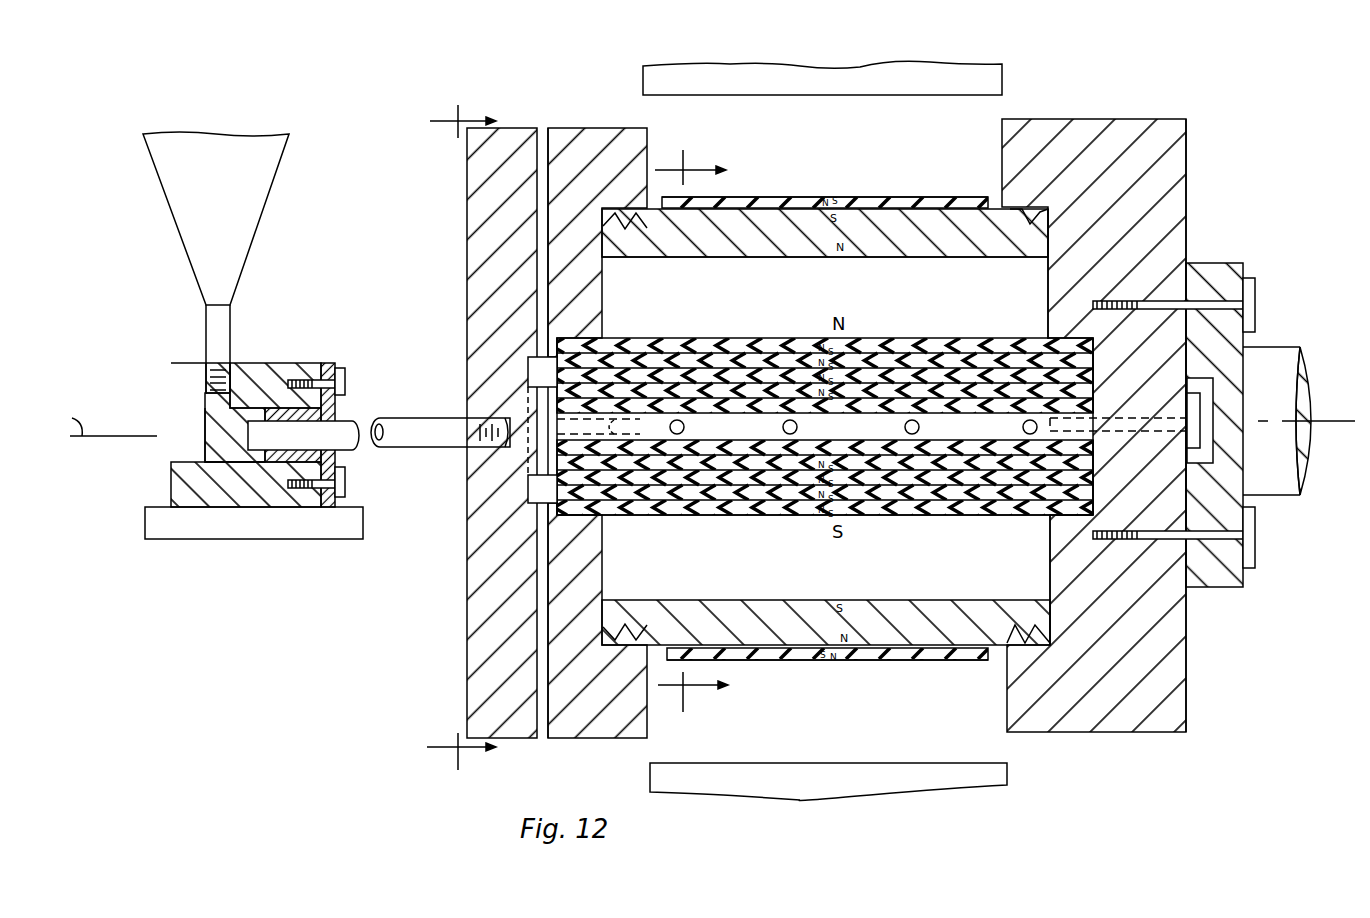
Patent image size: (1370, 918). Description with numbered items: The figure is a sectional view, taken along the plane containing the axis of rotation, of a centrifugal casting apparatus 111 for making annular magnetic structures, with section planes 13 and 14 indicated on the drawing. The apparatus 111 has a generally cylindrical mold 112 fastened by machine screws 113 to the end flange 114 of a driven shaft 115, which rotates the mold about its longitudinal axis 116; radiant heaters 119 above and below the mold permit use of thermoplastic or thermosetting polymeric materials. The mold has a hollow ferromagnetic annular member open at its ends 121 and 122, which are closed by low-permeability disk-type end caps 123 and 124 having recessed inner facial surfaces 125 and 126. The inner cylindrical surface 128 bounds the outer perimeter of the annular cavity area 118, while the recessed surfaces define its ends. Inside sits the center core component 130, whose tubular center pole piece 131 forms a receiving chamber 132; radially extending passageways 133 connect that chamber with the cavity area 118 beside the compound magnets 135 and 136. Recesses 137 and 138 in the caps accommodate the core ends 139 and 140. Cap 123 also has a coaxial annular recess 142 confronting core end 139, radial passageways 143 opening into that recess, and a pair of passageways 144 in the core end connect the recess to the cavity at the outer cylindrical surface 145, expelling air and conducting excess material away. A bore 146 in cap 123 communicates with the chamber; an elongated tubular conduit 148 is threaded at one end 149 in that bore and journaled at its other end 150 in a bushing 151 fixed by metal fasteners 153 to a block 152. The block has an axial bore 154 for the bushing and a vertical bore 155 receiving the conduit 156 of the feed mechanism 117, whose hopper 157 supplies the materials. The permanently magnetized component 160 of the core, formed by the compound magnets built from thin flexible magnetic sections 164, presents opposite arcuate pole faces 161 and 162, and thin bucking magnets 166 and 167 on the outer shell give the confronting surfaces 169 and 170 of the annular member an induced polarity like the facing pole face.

The section line 13- 13 is at (458, 444).
The section line 14- 14 is at (690, 438).
The apparatus 111 is at (1100, 119).
The mold 112 is at (1190, 122).
The machine screws 113 is at (1272, 545).
The end flange 114 is at (1245, 372).
The driven shaft 115 is at (1270, 496).
The longitudinal axis 116 is at (1356, 415).
The feed mechanism 117 is at (265, 363).
The annular cavity area 118 is at (1035, 570).
The radiant heaters 119 is at (1027, 772).
The end of annular member 121 is at (602, 246).
The end of annular member 122 is at (1050, 240).
The end cap 123 is at (467, 187).
The end cap 124 is at (1187, 172).
The recessed inner facial surface 125 is at (602, 290).
The recessed inner facial surface 126 is at (1048, 283).
The inner cylindrical surface 128 is at (612, 600).
The center core component 130 is at (808, 540).
The center pole piece 131 is at (1095, 420).
The receiving chamber 132 is at (1088, 432).
The passageways 133 is at (905, 427).
The compound magnet 135 is at (798, 338).
The compound magnet 136 is at (790, 520).
The recess 137 is at (565, 513).
The recess 138 is at (1093, 372).
The end of core component 139 is at (528, 370).
The end of core component 140 is at (1093, 490).
The annular inner recess 142 is at (528, 487).
The radial passageways 143 is at (537, 606).
The passageways 144 is at (628, 432).
The outer cylindrical surface 145 is at (1012, 338).
The bore 146 is at (546, 440).
The tubular conduit 148 is at (428, 452).
The end of conduit 149 is at (505, 417).
The end of conduit 150 is at (250, 442).
The bushing 151 is at (330, 414).
The block 152 is at (171, 475).
The metal fasteners 153 is at (345, 383).
The bore 154 is at (205, 424).
The vertically extending bore 155 is at (205, 398).
The conduit 156 is at (206, 332).
The hopper 157 is at (270, 198).
The permanently magnetized component 160 is at (960, 516).
The arcuate pole face 161 is at (922, 338).
The arcuate pole face 162 is at (930, 517).
The magnetic sections 164 is at (698, 340).
The bucking magnet 166 is at (982, 197).
The bucking magnet 167 is at (970, 660).
The surface of annular member 169 is at (732, 258).
The surface of annular member 170 is at (792, 660).